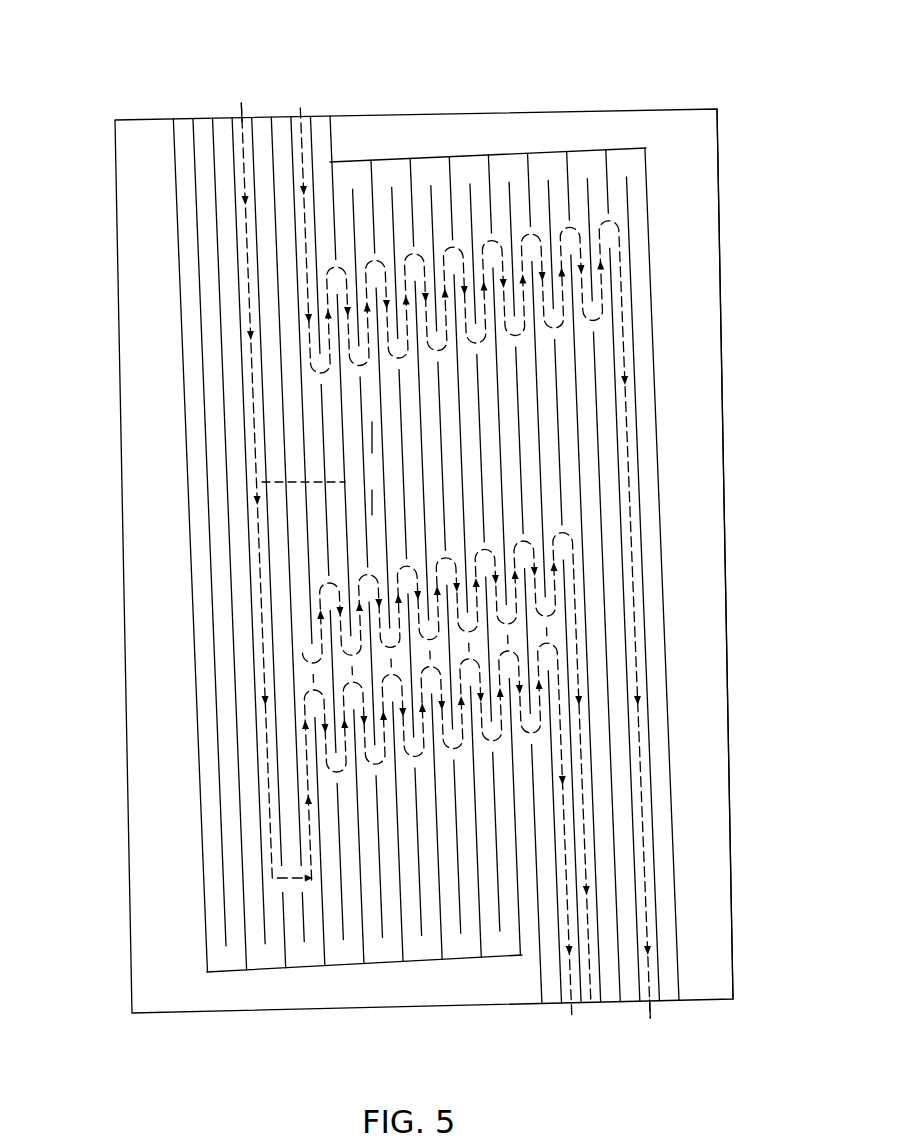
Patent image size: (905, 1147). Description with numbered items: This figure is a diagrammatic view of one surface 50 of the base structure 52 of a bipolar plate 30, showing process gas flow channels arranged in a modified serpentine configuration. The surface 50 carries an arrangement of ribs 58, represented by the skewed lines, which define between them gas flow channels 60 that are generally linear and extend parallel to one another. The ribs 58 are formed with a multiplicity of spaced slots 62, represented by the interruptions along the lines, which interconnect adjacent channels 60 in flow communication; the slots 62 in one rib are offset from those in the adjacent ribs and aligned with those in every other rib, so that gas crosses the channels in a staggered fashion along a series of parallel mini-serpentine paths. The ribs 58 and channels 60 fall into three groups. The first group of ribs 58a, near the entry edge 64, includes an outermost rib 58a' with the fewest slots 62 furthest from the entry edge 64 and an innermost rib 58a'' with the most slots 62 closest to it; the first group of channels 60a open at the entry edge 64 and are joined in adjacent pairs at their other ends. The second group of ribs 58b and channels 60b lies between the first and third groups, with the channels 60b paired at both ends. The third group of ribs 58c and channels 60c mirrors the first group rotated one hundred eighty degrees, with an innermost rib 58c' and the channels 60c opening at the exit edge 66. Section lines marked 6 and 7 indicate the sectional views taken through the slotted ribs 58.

The bipolar plate 30 is at (629, 80).
The surface 50 is at (700, 161).
The base structure 52 is at (721, 320).
The ribs 58 is at (178, 290).
The first group of ribs 58a is at (192, 543).
The outermost rib 58a' is at (132, 545).
The innermost rib 58a'' is at (364, 511).
The second group of ribs 58b is at (470, 217).
The third group of ribs 58c is at (633, 604).
The innermost rib of third group 58c' is at (717, 574).
The gas flow channels 60 is at (662, 716).
The first group of gas flow channels 60a is at (232, 438).
The second group of gas flow channels 60b is at (470, 900).
The third group of gas flow channels 60c is at (628, 888).
The slots 62 is at (548, 630).
The entry edge 64 is at (262, 113).
The exit edge 66 is at (612, 1003).
The section line 6- 6 is at (395, 497).
The section line 7- 7 is at (333, 447).